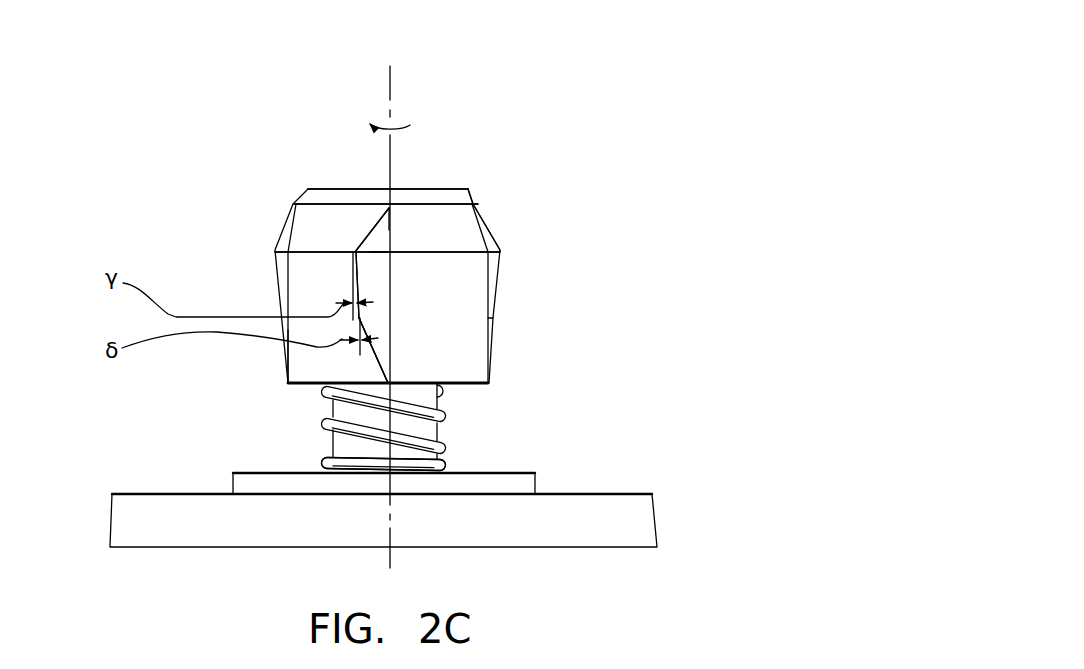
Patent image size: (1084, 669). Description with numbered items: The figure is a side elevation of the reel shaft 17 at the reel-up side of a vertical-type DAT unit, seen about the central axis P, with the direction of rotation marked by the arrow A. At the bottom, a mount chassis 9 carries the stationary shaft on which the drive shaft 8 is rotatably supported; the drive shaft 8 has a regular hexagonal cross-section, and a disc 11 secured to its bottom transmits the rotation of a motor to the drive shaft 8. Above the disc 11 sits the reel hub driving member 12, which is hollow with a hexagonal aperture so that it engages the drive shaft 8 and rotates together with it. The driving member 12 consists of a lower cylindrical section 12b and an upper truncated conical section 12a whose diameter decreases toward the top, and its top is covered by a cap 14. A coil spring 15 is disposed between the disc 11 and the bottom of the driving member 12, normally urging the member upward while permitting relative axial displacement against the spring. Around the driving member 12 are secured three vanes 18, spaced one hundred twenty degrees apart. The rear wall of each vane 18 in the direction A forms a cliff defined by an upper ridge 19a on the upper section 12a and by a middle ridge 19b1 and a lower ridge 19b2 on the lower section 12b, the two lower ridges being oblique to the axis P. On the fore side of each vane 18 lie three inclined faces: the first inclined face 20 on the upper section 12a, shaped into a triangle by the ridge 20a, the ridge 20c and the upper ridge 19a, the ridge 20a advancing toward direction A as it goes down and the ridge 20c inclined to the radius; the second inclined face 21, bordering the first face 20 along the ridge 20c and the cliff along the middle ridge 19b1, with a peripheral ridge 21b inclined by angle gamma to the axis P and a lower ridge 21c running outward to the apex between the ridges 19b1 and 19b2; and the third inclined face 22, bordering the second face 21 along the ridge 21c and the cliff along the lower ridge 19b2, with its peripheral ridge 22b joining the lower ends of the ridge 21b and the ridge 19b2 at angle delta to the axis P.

The axis P is at (392, 67).
The direction of rotation A is at (410, 128).
The drive shaft 8 is at (422, 431).
The mount chassis 9 is at (628, 523).
The disc 11 is at (513, 482).
The reel hub driving member 12 is at (292, 202).
The upper truncated conical section 12a is at (315, 233).
The lower cylindrical section 12b is at (303, 372).
The cap 14 is at (357, 197).
The coil spring 15 is at (327, 458).
The reel shaft 17 is at (453, 182).
The vanes 18 is at (403, 218).
The upper ridge 19a is at (390, 230).
The middle ridge 19b1 is at (373, 278).
The lower ridge 19b2 is at (380, 341).
The first inclined face 20 is at (377, 237).
The ridge of first inclined face 20a is at (387, 237).
The ridge of first inclined face 20c is at (370, 255).
The second inclined face 21 is at (373, 292).
The ridge of second inclined face 21b is at (353, 292).
The lower ridge of second inclined face 21c is at (372, 317).
The third inclined face 22 is at (382, 351).
The ridge of third inclined face 22b is at (378, 365).